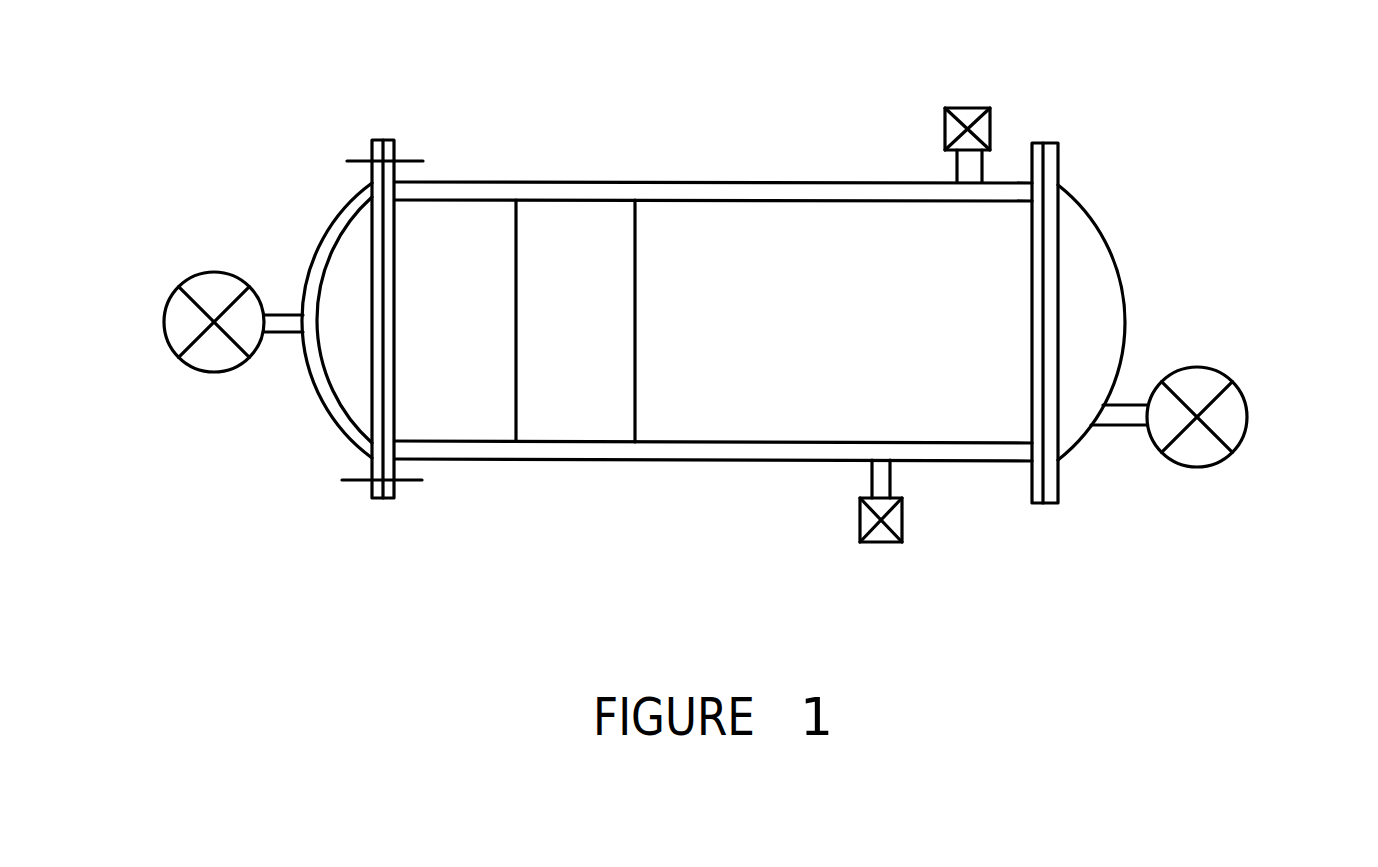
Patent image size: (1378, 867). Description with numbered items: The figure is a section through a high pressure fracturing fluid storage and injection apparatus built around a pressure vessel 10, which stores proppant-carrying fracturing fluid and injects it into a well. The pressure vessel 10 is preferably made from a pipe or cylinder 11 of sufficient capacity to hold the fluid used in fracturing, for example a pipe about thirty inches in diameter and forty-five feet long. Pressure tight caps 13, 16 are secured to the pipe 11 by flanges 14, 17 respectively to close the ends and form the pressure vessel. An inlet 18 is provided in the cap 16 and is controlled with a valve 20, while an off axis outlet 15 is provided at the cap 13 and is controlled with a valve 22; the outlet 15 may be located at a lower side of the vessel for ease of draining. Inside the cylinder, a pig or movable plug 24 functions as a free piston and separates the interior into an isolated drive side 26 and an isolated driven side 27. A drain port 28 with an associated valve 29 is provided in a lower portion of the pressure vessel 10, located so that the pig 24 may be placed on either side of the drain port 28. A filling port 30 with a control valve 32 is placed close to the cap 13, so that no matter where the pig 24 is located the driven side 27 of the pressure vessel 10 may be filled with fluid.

The pressure vessel 10 is at (718, 281).
The pipe or cylinder 11 is at (690, 195).
The pressure tight cap 13 is at (1088, 212).
The flange 14 is at (1052, 143).
The off axis outlet 15 is at (1117, 427).
The pressure tight cap 16 is at (332, 223).
The flange 17 is at (393, 146).
The inlet 18 is at (288, 335).
The valve 20 is at (215, 376).
The valve 22 is at (1243, 441).
The pig or movable plug 24 is at (634, 361).
The drive side 26 is at (472, 348).
The driven side 27 is at (848, 354).
The drain port 28 is at (893, 480).
The valve 29 is at (877, 543).
The filling port 30 is at (958, 167).
The control valve 32 is at (975, 108).